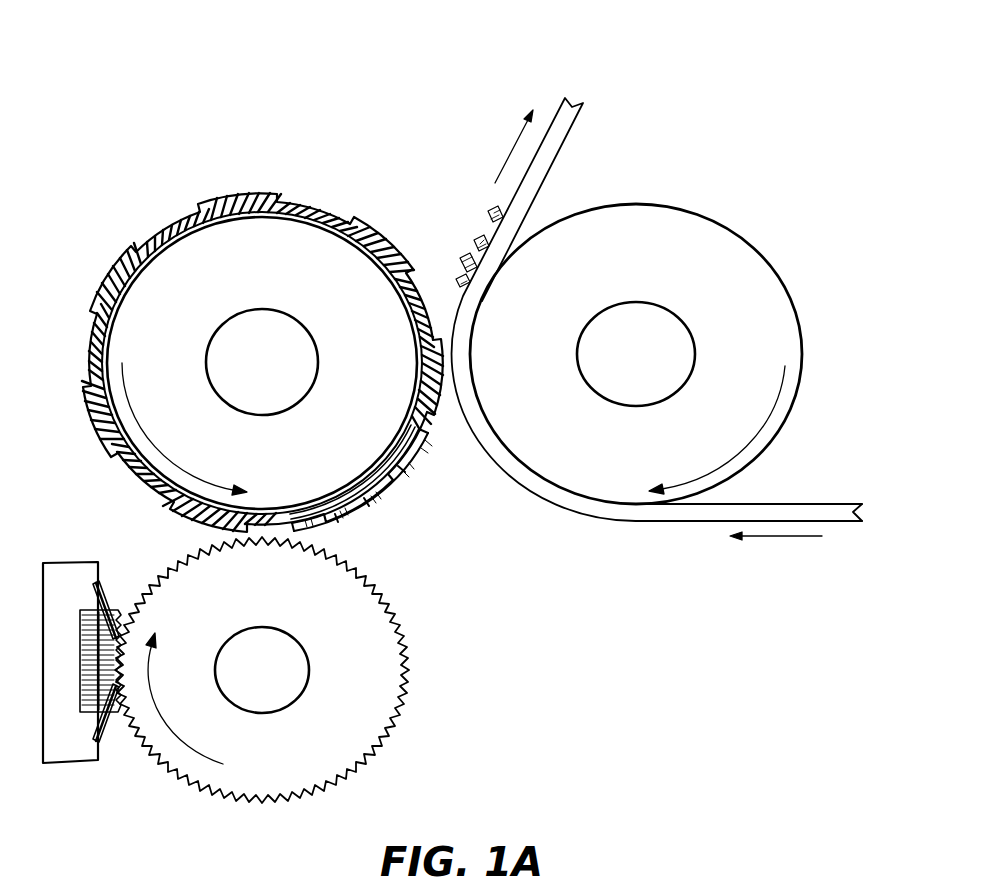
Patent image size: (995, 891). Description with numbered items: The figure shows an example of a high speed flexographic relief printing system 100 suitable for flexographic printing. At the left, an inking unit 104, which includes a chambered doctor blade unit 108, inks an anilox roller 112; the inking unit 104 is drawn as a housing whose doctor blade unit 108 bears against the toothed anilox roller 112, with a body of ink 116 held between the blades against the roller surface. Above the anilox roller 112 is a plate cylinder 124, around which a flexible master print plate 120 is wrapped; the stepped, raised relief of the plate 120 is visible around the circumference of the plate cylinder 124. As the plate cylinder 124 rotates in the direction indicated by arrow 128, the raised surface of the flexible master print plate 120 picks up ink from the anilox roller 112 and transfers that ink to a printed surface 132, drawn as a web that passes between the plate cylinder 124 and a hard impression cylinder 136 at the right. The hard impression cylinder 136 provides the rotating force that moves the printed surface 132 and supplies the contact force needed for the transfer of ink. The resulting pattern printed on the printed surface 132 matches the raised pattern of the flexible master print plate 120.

The high speed flexographic relief printing system 100 is at (757, 43).
The inking unit 104 is at (68, 763).
The chambered doctor blade unit 108 is at (118, 606).
The anilox roller 112 is at (367, 593).
The adhesive/material 116 is at (303, 527).
The flexible master print plate 120 is at (395, 467).
The plate cylinder 124 is at (298, 236).
The arrow 128 is at (155, 444).
The printed surface 132 is at (572, 513).
The hard impression cylinder 136 is at (683, 213).